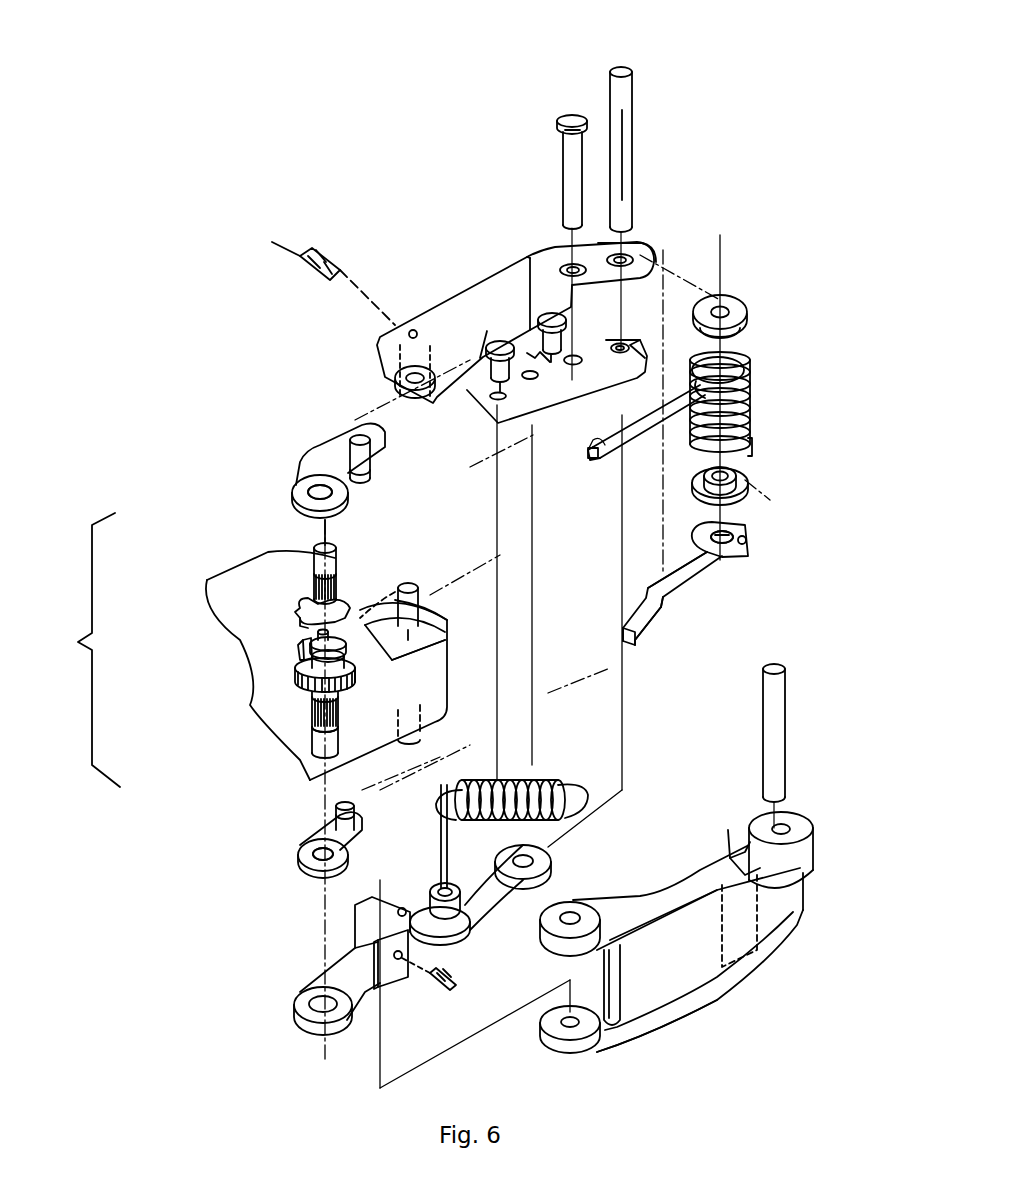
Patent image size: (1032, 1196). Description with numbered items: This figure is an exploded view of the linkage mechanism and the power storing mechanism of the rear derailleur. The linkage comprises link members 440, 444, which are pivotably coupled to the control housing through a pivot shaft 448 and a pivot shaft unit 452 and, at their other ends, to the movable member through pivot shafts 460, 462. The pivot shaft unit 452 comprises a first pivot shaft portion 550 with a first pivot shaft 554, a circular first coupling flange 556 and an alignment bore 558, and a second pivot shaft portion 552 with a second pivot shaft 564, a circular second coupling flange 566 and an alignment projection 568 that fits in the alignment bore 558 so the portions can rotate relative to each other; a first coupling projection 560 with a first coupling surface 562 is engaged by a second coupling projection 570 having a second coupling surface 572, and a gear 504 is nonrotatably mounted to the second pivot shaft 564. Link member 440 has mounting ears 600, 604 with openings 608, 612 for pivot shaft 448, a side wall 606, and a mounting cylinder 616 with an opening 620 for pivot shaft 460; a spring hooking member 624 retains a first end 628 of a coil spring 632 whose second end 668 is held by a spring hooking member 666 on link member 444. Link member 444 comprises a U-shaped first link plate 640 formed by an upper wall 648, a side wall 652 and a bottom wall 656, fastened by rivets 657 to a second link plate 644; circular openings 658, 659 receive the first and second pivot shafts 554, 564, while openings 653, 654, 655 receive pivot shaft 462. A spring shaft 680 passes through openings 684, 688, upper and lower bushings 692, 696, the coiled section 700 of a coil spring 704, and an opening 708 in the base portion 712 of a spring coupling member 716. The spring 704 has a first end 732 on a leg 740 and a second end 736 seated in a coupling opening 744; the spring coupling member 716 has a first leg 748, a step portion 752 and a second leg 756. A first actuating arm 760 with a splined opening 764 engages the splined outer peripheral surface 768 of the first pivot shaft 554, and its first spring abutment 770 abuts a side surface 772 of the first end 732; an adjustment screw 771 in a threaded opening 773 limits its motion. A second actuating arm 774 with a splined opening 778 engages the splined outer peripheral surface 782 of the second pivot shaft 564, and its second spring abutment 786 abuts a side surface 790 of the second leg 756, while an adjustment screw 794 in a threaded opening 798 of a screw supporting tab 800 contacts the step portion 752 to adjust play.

The link member 440 is at (700, 1032).
The link member 444 is at (638, 220).
The pivot shaft 448 is at (420, 598).
The pivot shaft unit 452 is at (72, 650).
The pivot shaft 460 is at (788, 682).
The pivot shaft 462 is at (633, 99).
The gear 504 is at (300, 702).
The first pivot shaft portion 550 is at (303, 584).
The second pivot shaft portion 552 is at (352, 695).
The first pivot shaft 554 is at (334, 549).
The first coupling flange 556 is at (380, 577).
The alignment bore 558 is at (388, 612).
The first coupling projection 560 is at (300, 618).
The first coupling surface 562 is at (310, 644).
The second pivot shaft 564 is at (340, 742).
The second coupling flange 566 is at (447, 662).
The alignment projection 568 is at (447, 630).
The second coupling projection 570 is at (297, 672).
The second coupling surface 572 is at (300, 648).
The mounting ear 600 is at (605, 906).
The mounting ear 604 is at (610, 1046).
The side wall 606 is at (715, 990).
The opening 608 is at (560, 919).
The opening 612 is at (560, 1032).
The mounting cylinder 616 is at (815, 840).
The opening 620 is at (785, 823).
The spring hooking member 624 is at (730, 861).
The first end 628 is at (588, 790).
The coil spring 632 is at (545, 782).
The first link plate 640 is at (495, 268).
The second link plate 644 is at (368, 899).
The upper wall 648 is at (640, 248).
The side wall 652 is at (470, 292).
The opening 653 is at (660, 252).
The opening 654 is at (700, 292).
The opening 655 is at (552, 859).
The bottom wall 656 is at (490, 412).
The rivets 657 is at (560, 262).
The circular opening 658 is at (400, 390).
The circular opening 659 is at (296, 1000).
The spring hooking member 666 is at (452, 916).
The second end 668 is at (450, 737).
The spring shaft 680 is at (566, 118).
The opening 684 is at (565, 250).
The opening 688 is at (574, 366).
The upper bushing 692 is at (750, 311).
The lower bushing 696 is at (750, 484).
The coiled section 700 is at (752, 366).
The coil spring 704 is at (768, 392).
The opening 708 is at (712, 534).
The base portion 712 is at (710, 538).
The spring coupling member 716 is at (641, 585).
The first end 732 is at (593, 459).
The second end 736 is at (752, 449).
The leg 740 is at (630, 454).
The coupling opening 744 is at (750, 541).
The first leg 748 is at (688, 580).
The step portion 752 is at (665, 604).
The second leg 756 is at (650, 635).
The first actuating arm 760 is at (298, 463).
The splined opening 764 is at (300, 491).
The splined outer peripheral surface 768 is at (275, 556).
The first spring abutment 770 is at (372, 471).
The adjustment screw 771 is at (319, 270).
The side surface 772 is at (595, 438).
The threaded opening 773 is at (408, 334).
The second actuating arm 774 is at (305, 841).
The splined opening 778 is at (315, 863).
The splined outer peripheral surface 782 is at (312, 722).
The second spring abutment 786 is at (335, 814).
The side surface 790 is at (640, 637).
The adjustment screw 794 is at (458, 988).
The threaded opening 798 is at (402, 962).
The screw supporting tab 800 is at (410, 965).